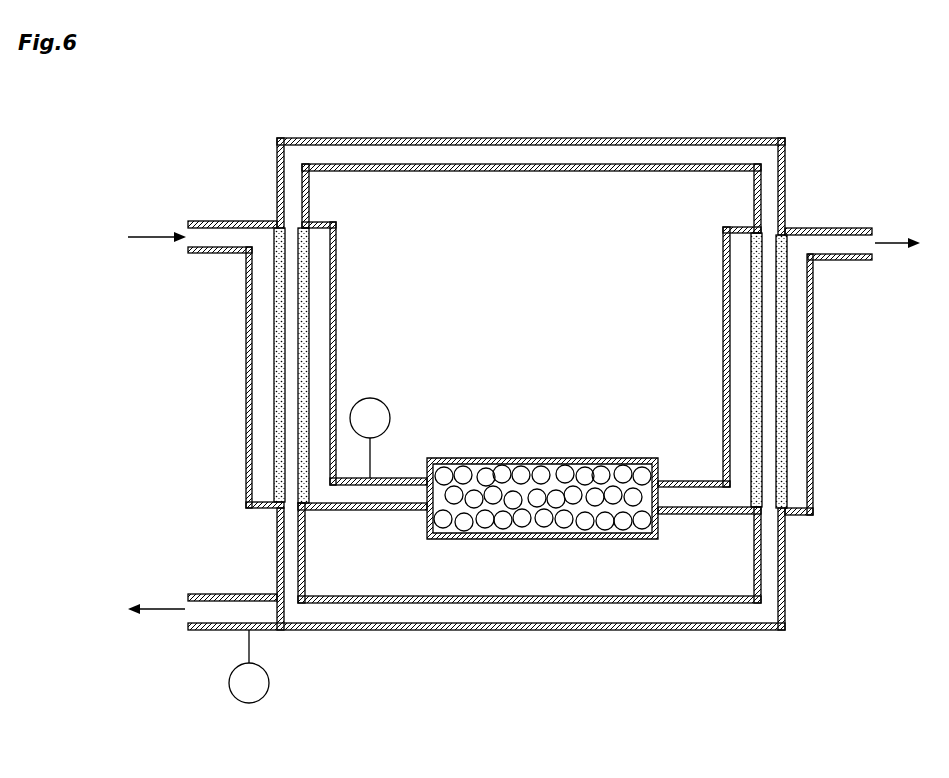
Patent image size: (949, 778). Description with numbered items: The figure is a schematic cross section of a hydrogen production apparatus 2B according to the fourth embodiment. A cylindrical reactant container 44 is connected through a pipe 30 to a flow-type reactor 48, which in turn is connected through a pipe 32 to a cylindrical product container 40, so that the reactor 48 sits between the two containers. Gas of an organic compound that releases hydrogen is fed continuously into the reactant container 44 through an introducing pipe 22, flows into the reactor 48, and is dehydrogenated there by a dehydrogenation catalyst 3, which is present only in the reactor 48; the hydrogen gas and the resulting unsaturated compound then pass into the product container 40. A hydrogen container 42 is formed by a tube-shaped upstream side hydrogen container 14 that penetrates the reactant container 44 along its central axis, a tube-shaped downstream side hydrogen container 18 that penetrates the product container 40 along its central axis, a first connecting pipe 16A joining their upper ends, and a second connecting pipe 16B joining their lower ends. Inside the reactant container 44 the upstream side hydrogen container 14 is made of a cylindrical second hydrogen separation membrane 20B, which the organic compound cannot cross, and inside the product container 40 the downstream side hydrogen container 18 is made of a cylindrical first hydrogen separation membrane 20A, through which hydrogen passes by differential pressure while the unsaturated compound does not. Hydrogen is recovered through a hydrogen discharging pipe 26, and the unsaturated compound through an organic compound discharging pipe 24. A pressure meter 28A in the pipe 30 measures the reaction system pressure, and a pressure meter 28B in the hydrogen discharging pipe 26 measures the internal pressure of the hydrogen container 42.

The hydrogen production apparatus 2B is at (747, 108).
The introducing pipe 22 is at (225, 221).
The organic compound discharging pipe 24 is at (855, 228).
The hydrogen discharging pipe 26 is at (210, 594).
The upstream side hydrogen container 14 is at (309, 193).
The first connecting pipe 16A is at (560, 171).
The second connecting pipe 16B is at (593, 596).
The downstream side hydrogen container 18 is at (754, 197).
The hydrogen container 42 is at (529, 383).
The first hydrogen separation membrane 20A is at (751, 286).
The second hydrogen separation membrane 20B is at (274, 280).
The reactant container 44 is at (246, 342).
The product container 40 is at (723, 345).
The pipe 30 is at (383, 510).
The pipe 32 is at (683, 481).
The flow-type reactor 48 is at (600, 458).
The dehydrogenation catalyst 3 is at (565, 478).
The pressure meter 28A is at (380, 400).
The pressure meter 28B is at (245, 703).